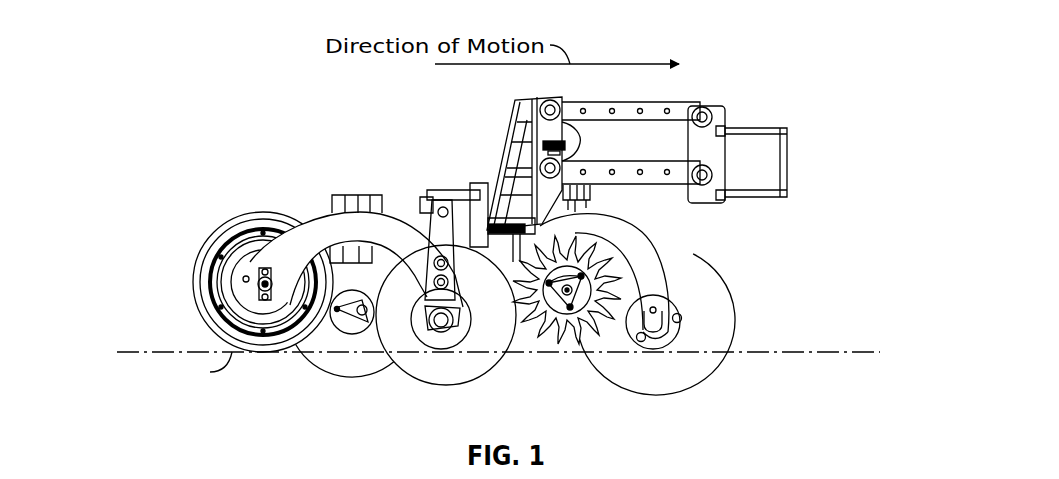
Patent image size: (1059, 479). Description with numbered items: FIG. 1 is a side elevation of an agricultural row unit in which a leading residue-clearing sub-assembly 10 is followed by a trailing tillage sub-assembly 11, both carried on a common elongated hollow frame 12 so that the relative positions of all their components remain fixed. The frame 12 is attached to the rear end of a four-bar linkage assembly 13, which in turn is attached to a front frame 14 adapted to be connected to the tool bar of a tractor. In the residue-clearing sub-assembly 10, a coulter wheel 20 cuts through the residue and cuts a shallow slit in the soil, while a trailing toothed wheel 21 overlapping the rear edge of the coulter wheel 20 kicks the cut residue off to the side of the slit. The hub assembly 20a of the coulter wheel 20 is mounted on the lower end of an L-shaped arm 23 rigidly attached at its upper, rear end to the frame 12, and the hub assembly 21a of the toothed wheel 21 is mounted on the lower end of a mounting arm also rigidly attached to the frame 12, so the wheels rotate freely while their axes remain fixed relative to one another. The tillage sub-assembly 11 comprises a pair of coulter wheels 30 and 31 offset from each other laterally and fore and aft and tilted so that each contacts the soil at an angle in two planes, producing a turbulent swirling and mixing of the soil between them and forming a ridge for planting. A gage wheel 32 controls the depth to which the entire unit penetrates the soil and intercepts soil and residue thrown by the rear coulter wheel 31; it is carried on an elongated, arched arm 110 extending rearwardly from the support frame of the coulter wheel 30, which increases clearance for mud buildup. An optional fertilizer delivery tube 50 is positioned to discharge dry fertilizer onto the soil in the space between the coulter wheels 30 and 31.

The residue-clearing sub-assembly 10 is at (563, 421).
The tillage sub-assembly 11 is at (253, 381).
The frame 12 is at (380, 245).
The four-bar linkage assembly 13 is at (697, 89).
The front frame 14 is at (790, 162).
The coulter wheel 20 is at (672, 393).
The hub assembly 20a is at (670, 333).
The toothed wheel 21 is at (556, 340).
The hub assembly 21a is at (550, 312).
The L-shaped arm 23 is at (677, 290).
The coulter wheel 30 is at (463, 384).
The coulter wheel 31 is at (335, 366).
The gage wheel 32 is at (257, 221).
The fertilizer delivery tube 50 is at (478, 183).
The arched arm 110 is at (398, 218).